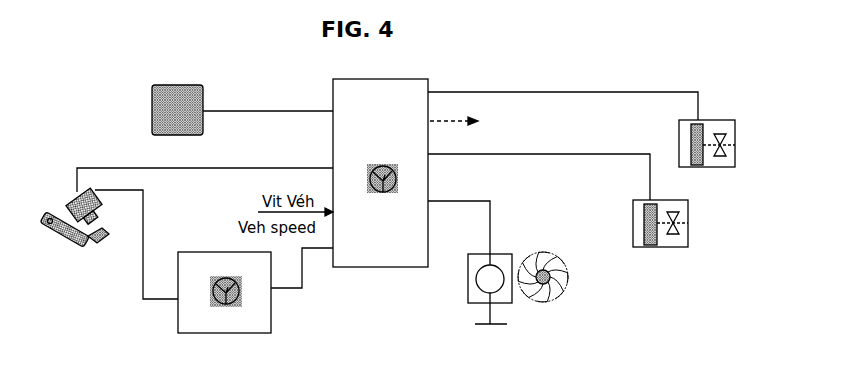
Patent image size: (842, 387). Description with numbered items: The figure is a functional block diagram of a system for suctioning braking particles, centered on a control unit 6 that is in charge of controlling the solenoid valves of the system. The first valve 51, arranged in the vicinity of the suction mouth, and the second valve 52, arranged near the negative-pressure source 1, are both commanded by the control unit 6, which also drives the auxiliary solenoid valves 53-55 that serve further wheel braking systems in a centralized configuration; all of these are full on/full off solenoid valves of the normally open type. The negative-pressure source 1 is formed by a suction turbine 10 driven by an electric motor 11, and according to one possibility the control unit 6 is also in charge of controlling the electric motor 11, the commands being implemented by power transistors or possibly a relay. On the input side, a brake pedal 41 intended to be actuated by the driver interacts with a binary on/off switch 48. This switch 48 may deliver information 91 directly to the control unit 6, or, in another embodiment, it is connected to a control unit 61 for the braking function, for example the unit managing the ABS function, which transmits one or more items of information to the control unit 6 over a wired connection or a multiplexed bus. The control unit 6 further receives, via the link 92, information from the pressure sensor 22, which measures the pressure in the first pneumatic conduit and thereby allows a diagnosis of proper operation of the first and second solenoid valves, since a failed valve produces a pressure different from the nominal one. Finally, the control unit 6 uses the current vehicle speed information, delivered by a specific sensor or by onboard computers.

The negative-pressure source 1 is at (530, 233).
The control unit 6 is at (400, 79).
The suction turbine 10 is at (563, 296).
The electric motor 11 is at (475, 286).
The pressure sensor 22 is at (178, 85).
The brake pedal 41 is at (54, 227).
The binary on/off switch 48 is at (62, 198).
The first valve 51 is at (735, 140).
The second valve 52 is at (688, 212).
The auxiliary solenoid valves 53-55 is at (478, 122).
The control unit for the braking function 61 is at (212, 333).
The information 91 is at (107, 168).
The link 92 is at (248, 111).